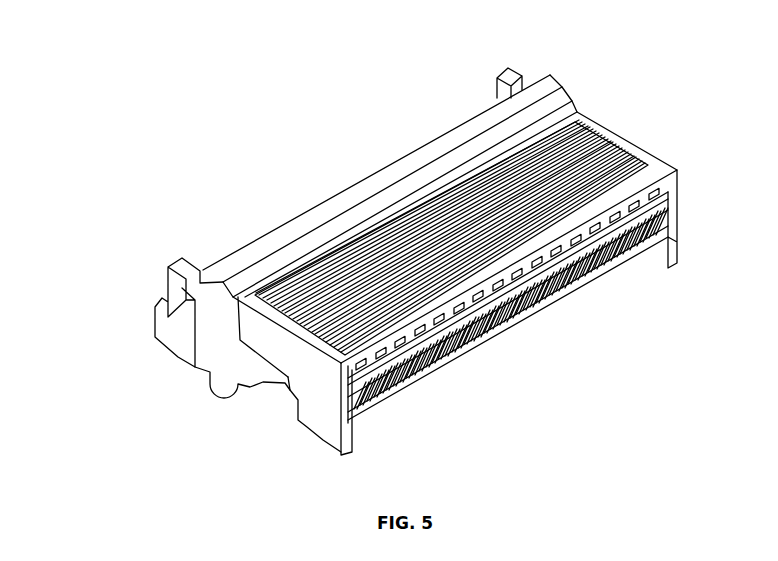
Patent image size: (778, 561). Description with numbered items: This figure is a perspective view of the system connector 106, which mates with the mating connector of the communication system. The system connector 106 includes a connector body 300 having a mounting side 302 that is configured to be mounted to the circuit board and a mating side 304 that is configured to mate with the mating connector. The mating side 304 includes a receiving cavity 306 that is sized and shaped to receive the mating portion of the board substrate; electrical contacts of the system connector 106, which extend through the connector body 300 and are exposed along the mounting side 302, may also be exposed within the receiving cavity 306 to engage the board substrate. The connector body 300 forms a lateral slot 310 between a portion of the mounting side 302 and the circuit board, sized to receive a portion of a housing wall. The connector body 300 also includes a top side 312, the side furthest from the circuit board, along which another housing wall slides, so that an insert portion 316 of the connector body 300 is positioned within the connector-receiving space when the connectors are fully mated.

The system connector 106 is at (664, 68).
The connector body 300 is at (537, 92).
The mounting side 302 is at (196, 397).
The mating side 304 is at (647, 265).
The receiving cavity 306 is at (651, 206).
The lateral slot 310 is at (522, 333).
The top side 312 is at (631, 149).
The insert portion 316 is at (284, 388).